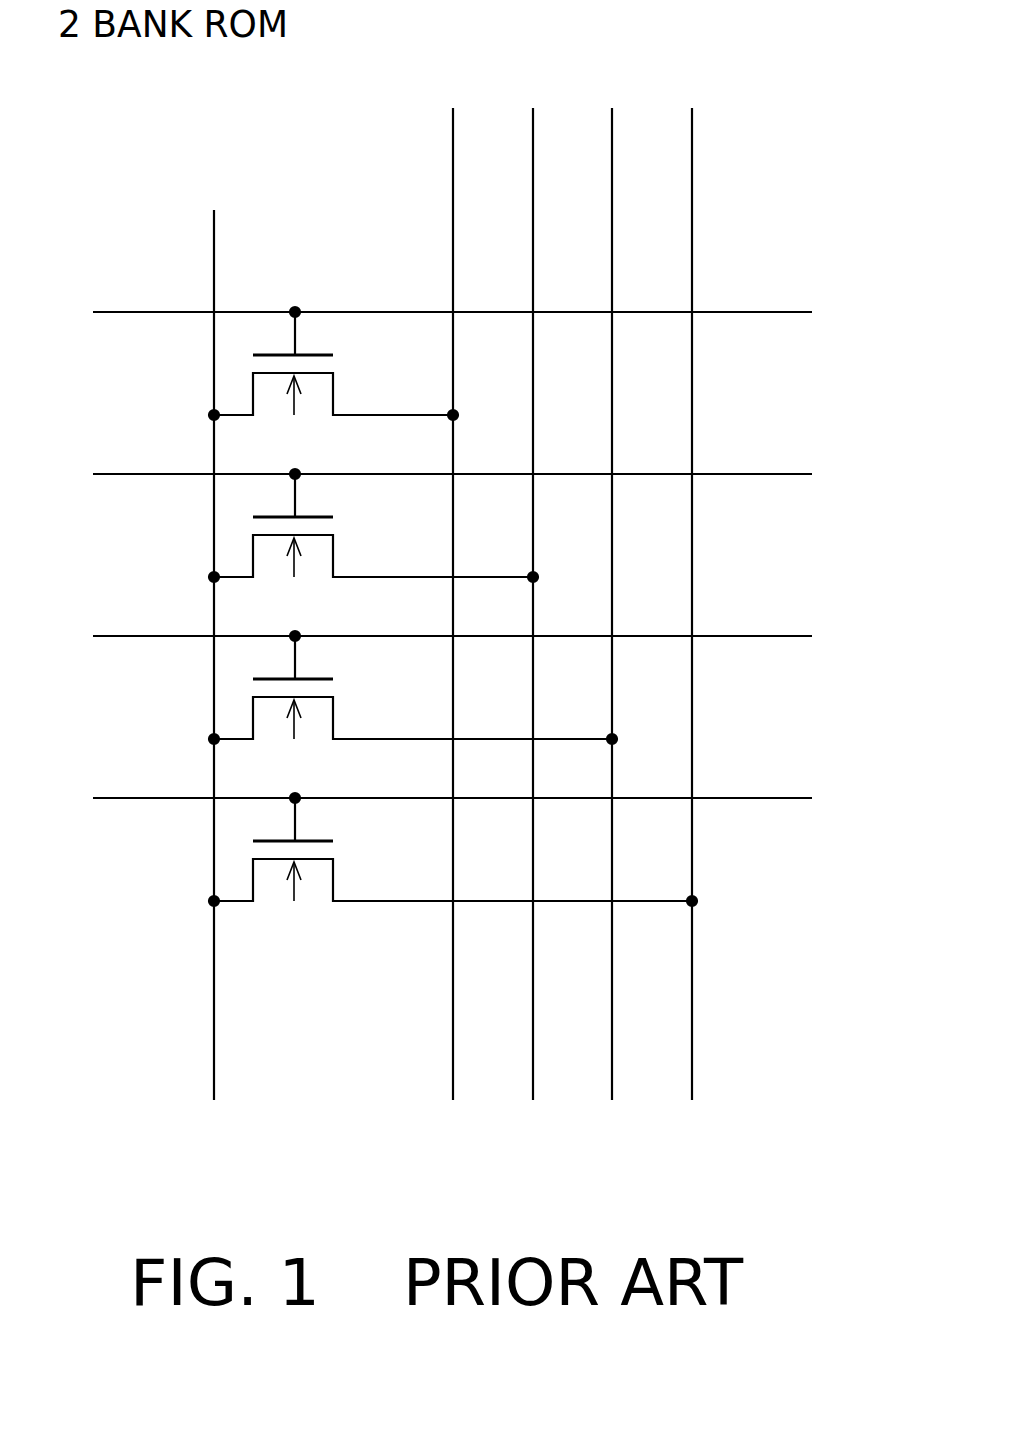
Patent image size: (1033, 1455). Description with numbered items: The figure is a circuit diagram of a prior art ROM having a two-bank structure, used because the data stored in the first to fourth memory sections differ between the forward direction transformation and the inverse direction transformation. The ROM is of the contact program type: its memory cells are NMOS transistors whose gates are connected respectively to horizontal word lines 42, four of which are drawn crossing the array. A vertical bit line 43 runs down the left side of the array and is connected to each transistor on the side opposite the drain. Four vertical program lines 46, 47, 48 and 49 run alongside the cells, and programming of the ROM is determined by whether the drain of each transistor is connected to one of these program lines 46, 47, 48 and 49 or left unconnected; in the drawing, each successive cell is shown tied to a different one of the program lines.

The word line 42 is at (141, 310).
The bit line 43 is at (214, 240).
The program line 46 is at (453, 172).
The program line 47 is at (533, 192).
The program line 48 is at (612, 222).
The program line 49 is at (692, 262).